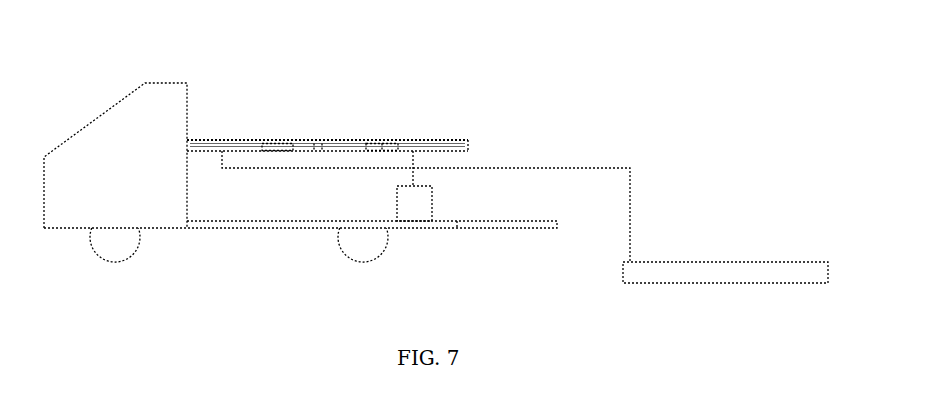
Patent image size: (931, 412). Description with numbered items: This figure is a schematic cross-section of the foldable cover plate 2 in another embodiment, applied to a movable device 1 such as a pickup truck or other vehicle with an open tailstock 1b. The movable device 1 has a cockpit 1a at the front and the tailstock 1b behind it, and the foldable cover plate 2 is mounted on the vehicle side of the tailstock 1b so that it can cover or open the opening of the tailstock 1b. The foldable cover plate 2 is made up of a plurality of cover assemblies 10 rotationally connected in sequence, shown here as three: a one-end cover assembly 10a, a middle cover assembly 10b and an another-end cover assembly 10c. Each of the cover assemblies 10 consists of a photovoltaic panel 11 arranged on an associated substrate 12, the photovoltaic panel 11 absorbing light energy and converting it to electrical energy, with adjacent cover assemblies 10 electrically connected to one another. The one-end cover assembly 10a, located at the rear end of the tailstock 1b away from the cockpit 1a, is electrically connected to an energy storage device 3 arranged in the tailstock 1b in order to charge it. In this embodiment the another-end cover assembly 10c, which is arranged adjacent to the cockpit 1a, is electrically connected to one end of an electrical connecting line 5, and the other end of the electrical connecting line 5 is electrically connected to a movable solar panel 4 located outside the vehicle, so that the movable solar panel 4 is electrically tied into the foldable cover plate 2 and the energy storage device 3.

The movable device 1 is at (309, 49).
The cockpit 1a is at (115, 138).
The tailstock 1b is at (232, 197).
The foldable cover plate 2 is at (222, 136).
The energy storage device 3 is at (413, 203).
The movable solar panel 4 is at (720, 273).
The electrical connecting line 5 is at (577, 166).
The cover assemblies 10 is at (423, 102).
The one-end cover assembly 10a is at (397, 148).
The middle cover assembly 10b is at (318, 148).
The another-end cover assembly 10c is at (245, 148).
The photovoltaic panel 11 is at (438, 140).
The substrate 12 is at (460, 147).